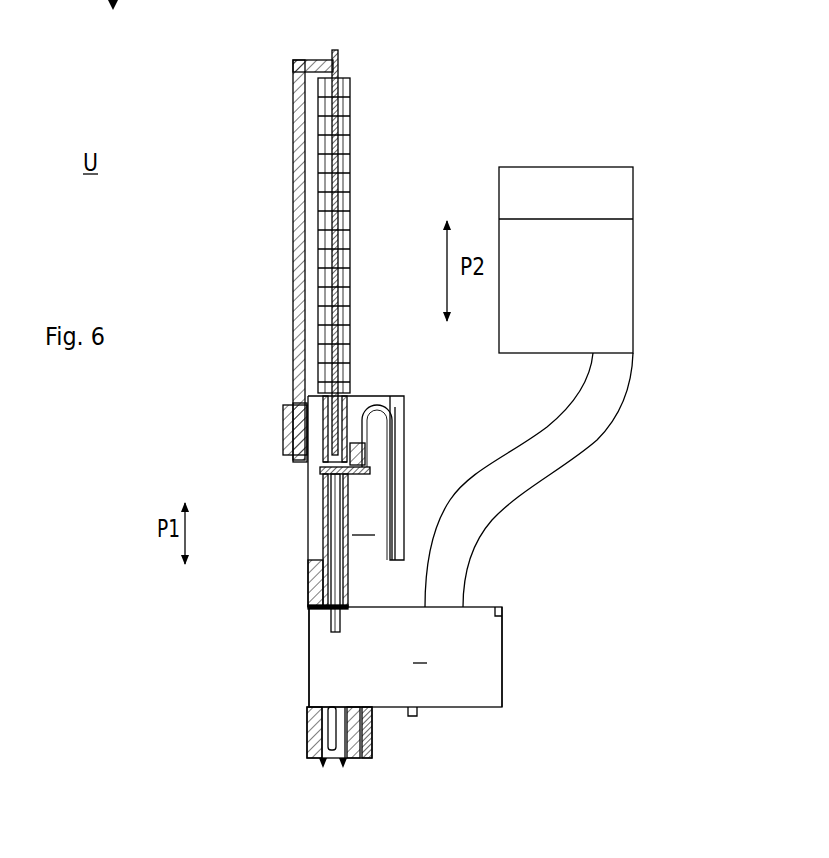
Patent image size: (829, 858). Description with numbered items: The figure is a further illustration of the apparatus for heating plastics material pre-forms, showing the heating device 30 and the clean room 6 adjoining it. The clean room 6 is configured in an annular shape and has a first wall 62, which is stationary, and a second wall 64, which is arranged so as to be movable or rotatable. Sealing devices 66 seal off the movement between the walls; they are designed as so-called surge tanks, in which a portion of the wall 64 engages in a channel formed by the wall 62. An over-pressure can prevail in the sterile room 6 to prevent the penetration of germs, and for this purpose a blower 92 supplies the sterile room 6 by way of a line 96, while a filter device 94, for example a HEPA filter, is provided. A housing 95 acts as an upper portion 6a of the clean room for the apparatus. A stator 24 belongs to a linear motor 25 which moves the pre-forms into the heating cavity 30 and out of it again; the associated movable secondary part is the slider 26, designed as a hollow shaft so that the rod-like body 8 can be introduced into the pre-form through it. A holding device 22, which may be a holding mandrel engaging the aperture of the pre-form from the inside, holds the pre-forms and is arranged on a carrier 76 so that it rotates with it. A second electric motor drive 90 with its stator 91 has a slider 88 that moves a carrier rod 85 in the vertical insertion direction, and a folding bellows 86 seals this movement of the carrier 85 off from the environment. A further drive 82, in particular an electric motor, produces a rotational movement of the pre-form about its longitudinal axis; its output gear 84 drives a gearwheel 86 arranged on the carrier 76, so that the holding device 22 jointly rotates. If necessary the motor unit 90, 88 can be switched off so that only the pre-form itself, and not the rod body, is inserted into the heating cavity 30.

The clean room 6 is at (405, 657).
The upper portion of the clean room 6a is at (356, 501).
The rod-like body 8 is at (335, 420).
The holding device 22 is at (325, 622).
The stator 24 is at (308, 572).
The linear motor 25 is at (305, 588).
The slider 26 is at (308, 498).
The heating device 30 is at (378, 738).
The first wall 62 is at (503, 658).
The second wall 64 is at (308, 660).
The sealing devices 66 is at (500, 612).
The carrier 76 is at (308, 515).
The drive 82 is at (403, 437).
The output gear 84 is at (403, 466).
The carrier rod 85 is at (338, 318).
The folding bellows 86 is at (340, 220).
The slider 88 is at (293, 174).
The second electric motor drive 90 is at (275, 427).
The stator 91 is at (290, 410).
The blower 92 is at (628, 272).
The filter device 94 is at (628, 184).
The housing 95 is at (403, 525).
The line 96 is at (520, 483).